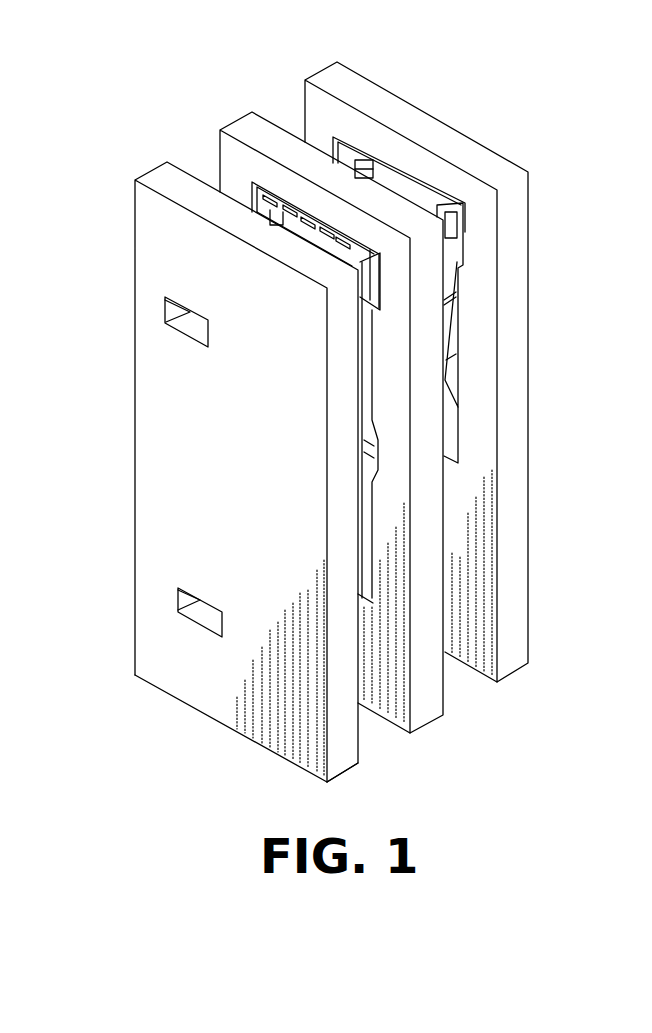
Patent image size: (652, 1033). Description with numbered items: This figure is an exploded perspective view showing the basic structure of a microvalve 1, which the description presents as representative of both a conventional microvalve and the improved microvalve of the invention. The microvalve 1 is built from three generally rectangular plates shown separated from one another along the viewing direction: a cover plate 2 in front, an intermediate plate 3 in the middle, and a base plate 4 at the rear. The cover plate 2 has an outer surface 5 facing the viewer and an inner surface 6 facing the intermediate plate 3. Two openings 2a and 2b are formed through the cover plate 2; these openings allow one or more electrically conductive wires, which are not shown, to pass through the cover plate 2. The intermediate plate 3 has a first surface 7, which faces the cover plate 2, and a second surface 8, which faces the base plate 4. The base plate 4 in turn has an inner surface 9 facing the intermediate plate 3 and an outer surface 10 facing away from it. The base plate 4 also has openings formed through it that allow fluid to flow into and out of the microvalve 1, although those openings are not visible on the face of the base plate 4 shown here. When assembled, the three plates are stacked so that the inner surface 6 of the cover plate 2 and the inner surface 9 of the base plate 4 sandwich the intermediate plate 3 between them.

The microvalve 1 is at (476, 99).
The cover plate 2 is at (158, 177).
The opening 2a is at (193, 330).
The opening 2b is at (202, 613).
The intermediate plate 3 is at (248, 130).
The base plate 4 is at (330, 77).
The outer surface 5 is at (288, 735).
The inner surface 6 is at (363, 745).
The first surface 7 is at (388, 697).
The second surface 8 is at (447, 688).
The inner surface 9 is at (474, 643).
The outer surface 10 is at (530, 628).